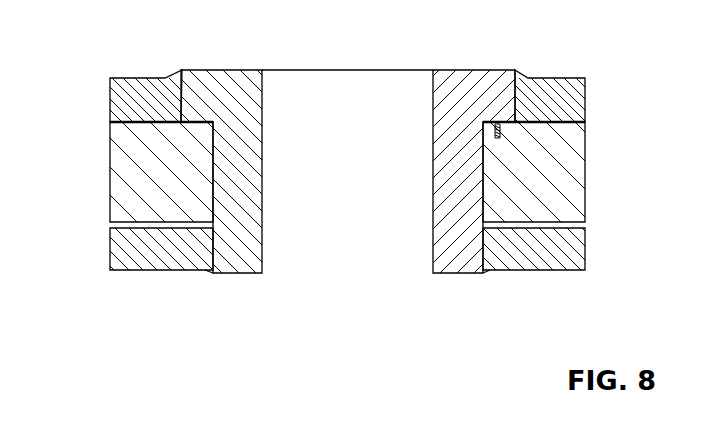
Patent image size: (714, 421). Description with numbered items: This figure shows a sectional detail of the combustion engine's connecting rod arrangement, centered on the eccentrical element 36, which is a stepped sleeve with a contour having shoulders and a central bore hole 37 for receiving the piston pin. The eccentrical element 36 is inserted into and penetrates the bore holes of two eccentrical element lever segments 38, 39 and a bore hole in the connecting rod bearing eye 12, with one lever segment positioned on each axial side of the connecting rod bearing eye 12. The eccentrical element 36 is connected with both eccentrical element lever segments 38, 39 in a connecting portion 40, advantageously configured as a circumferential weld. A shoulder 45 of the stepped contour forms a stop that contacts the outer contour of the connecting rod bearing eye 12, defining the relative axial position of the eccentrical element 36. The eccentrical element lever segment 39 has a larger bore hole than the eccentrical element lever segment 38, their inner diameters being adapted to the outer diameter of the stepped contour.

The connecting rod bearing eye 12 is at (120, 165).
The eccentrical element 36 is at (233, 248).
The bore hole 37 is at (403, 88).
The eccentrical element lever segment 38 is at (118, 255).
The eccentrical element lever segment 39 is at (120, 103).
The connecting portion 40 is at (518, 71).
The shoulder 45 is at (500, 136).